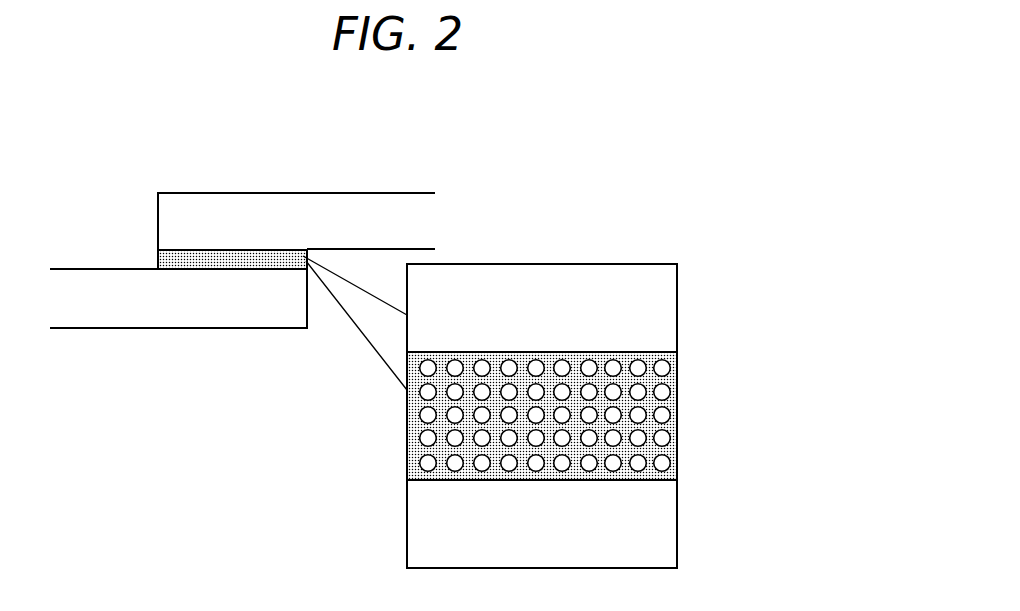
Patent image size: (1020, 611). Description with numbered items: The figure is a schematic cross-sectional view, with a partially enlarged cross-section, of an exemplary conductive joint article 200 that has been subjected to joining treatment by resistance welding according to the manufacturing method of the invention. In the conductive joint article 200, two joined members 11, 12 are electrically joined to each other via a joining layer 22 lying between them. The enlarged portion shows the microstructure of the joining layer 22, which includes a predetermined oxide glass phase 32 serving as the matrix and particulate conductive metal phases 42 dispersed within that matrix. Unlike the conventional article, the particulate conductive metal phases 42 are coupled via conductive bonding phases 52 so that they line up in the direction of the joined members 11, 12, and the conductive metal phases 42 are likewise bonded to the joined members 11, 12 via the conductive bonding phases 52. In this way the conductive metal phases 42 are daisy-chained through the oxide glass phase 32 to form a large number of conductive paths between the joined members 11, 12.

The conductive joint article 200 is at (547, 203).
The joined member 12 is at (353, 205).
The joined member 11 is at (138, 318).
The joining layer 22 is at (158, 258).
The oxide glass phase 32 is at (673, 377).
The conductive metal phase 42 is at (673, 413).
The conductive bonding phase 52 is at (673, 448).